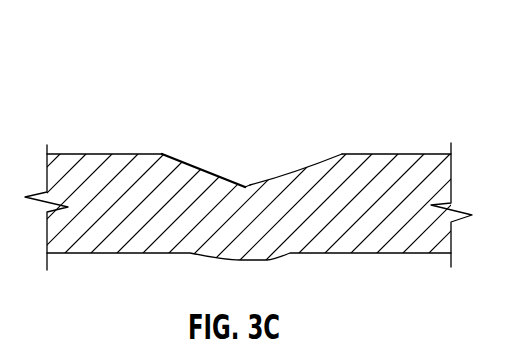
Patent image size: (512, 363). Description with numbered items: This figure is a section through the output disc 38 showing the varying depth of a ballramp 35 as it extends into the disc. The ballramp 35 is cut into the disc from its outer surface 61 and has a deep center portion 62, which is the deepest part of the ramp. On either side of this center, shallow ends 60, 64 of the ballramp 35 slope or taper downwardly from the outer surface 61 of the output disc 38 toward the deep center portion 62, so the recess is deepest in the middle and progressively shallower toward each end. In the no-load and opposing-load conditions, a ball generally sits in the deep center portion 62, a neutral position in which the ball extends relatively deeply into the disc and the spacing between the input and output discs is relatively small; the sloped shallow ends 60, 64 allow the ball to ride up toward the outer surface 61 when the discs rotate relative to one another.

The ballramp 35 is at (170, 122).
The output disc 38 is at (410, 100).
The shallow end 60 is at (208, 172).
The outer surface 61 is at (410, 154).
The deep center portion 62 is at (250, 186).
The shallow end 64 is at (332, 157).